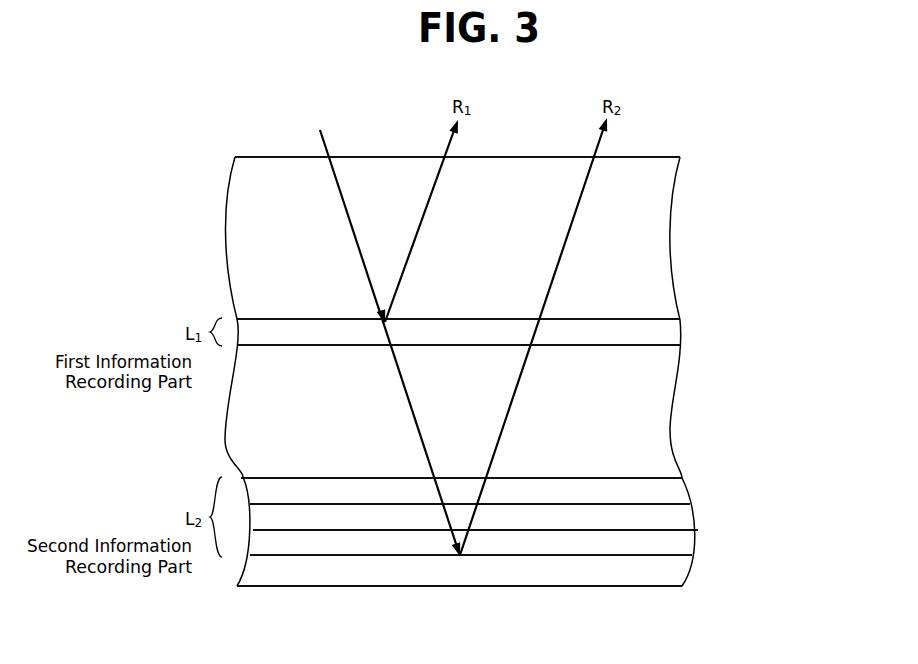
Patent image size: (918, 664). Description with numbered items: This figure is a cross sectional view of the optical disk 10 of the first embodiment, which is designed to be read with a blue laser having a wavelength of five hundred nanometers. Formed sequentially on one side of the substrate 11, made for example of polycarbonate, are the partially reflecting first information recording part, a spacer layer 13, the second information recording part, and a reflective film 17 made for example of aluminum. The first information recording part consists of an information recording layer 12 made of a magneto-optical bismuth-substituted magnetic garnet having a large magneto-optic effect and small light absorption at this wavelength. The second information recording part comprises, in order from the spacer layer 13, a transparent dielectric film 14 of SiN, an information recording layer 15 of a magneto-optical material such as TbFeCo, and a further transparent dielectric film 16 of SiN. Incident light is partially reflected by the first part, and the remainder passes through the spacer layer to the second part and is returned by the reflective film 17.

The optical disk 10 is at (665, 148).
The substrate 11 is at (655, 229).
The information recording layer 12 is at (655, 339).
The spacer layer 13 is at (655, 405).
The transparent dielectric film 14 is at (655, 497).
The information recording layer 15 is at (655, 521).
The transparent dielectric film 16 is at (655, 547).
The reflective film 17 is at (655, 577).